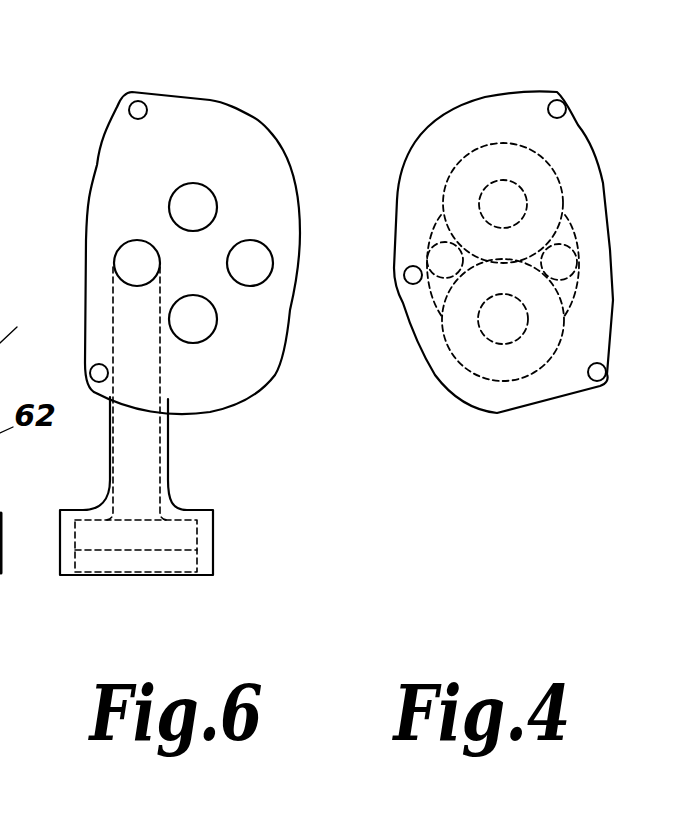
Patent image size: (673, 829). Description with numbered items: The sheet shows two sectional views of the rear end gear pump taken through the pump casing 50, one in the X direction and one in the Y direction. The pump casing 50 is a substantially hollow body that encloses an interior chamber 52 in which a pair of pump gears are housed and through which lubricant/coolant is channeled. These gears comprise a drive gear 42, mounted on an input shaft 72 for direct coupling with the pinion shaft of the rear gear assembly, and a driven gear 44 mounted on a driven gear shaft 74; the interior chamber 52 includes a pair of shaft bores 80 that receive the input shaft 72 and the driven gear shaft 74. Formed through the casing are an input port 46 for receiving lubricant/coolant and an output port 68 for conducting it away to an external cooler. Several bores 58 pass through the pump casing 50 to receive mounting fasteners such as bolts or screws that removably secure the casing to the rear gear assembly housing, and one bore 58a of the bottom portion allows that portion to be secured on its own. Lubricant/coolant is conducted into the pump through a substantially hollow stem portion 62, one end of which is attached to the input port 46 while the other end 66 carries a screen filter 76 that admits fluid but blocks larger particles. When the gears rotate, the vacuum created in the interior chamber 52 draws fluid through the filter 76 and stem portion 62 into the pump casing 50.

In FIG. 4, the drive gear 42 is at (468, 152).
In FIG. 4, the driven gear 44 is at (460, 330).
In FIG. 6, the input port 46 is at (130, 263).
In FIG. 4, the input port 46 is at (570, 262).
In FIG. 6, the pump casing 50 is at (257, 140).
In FIG. 4, the interior chamber 52 is at (478, 377).
In FIG. 6, the bores 58 is at (130, 108).
In FIG. 4, the bores 58 is at (568, 105).
In FIG. 4, the bore of the bottom portion 58a is at (405, 282).
In FIG. 6, the stem portion 62 is at (163, 463).
In FIG. 6, the end of the stem portion 66 is at (230, 553).
In FIG. 6, the output port 68 is at (263, 247).
In FIG. 4, the output port 68 is at (440, 265).
In FIG. 4, the input shaft 72 is at (505, 203).
In FIG. 4, the driven gear shaft 74 is at (503, 323).
In FIG. 6, the filter 76 is at (140, 550).
In FIG. 6, the shaft bores 80 is at (193, 210).